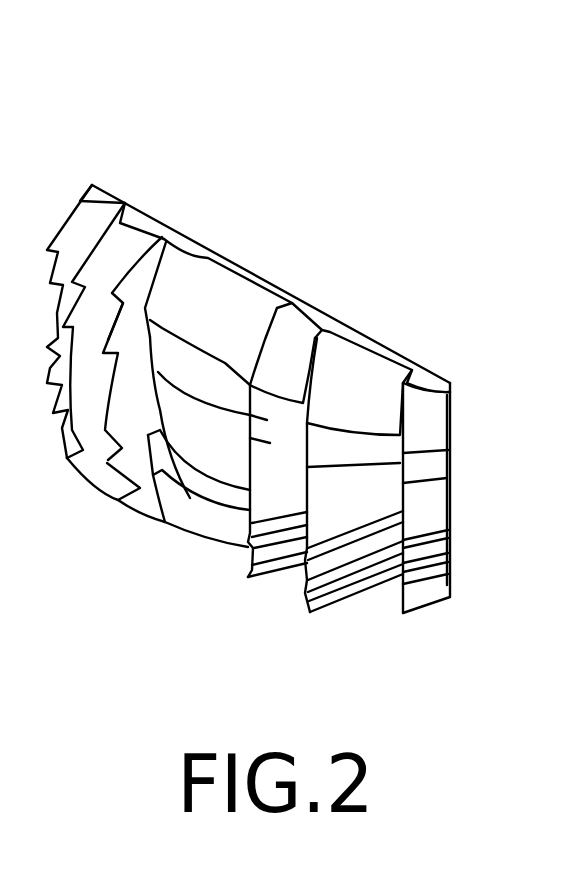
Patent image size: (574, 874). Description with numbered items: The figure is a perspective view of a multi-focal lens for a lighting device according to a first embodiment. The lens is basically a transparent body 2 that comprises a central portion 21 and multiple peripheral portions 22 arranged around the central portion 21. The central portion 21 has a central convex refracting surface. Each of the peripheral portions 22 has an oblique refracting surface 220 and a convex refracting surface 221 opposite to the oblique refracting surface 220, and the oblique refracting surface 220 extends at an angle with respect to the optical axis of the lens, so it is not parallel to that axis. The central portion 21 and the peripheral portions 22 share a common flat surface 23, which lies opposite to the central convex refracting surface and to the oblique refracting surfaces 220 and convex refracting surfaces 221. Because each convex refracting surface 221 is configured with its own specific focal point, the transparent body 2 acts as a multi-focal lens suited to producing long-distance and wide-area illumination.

The transparent body 2 is at (97, 150).
The central portion 21 is at (218, 453).
The peripheral portion 22 is at (347, 350).
The oblique refracting surface 220 is at (180, 270).
The convex refracting surface 221 is at (148, 262).
The common flat surface 23 is at (292, 290).